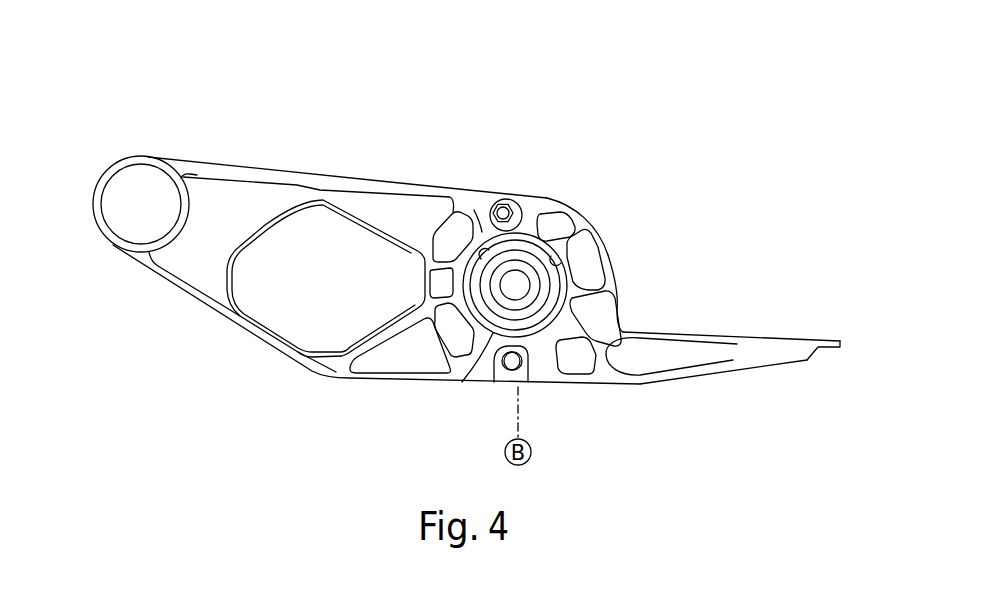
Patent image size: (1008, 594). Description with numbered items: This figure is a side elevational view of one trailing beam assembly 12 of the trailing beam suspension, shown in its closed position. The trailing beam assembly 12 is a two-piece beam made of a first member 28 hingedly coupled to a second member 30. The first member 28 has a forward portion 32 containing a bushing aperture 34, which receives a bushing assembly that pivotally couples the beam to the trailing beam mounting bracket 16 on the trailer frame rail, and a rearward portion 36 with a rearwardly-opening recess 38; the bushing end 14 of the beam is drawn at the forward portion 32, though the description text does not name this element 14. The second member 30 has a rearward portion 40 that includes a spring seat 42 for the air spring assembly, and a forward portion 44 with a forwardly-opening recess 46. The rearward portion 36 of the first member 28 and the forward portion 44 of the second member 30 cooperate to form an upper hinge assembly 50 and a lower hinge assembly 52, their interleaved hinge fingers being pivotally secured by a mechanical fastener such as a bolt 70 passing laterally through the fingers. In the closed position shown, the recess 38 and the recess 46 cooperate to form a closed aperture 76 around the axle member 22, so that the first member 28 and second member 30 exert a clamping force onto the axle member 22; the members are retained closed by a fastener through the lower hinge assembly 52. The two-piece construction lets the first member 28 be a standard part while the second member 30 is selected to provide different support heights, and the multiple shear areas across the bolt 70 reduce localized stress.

The trailing beam assembly 12 is at (366, 179).
The bushing ring 14 is at (94, 204).
The trailing beam mounting bracket 16 is at (841, 343).
The axle member 22 is at (487, 342).
The first member 28 is at (270, 168).
The second member 30 is at (617, 296).
The forward portion 32 is at (188, 181).
The bushing aperture 34 is at (146, 183).
The rearward portion 36 is at (477, 205).
The rearwardly-opening recess 38 is at (482, 255).
The rearward portion 40 is at (771, 346).
The spring seat 42 is at (727, 334).
The forward portion 44 is at (547, 200).
The forwardly-opening recess 46 is at (565, 262).
The upper hinge assembly 50 is at (508, 183).
The lower hinge assembly 52 is at (500, 383).
The bolt 70 is at (505, 212).
The closed aperture 76 is at (541, 343).